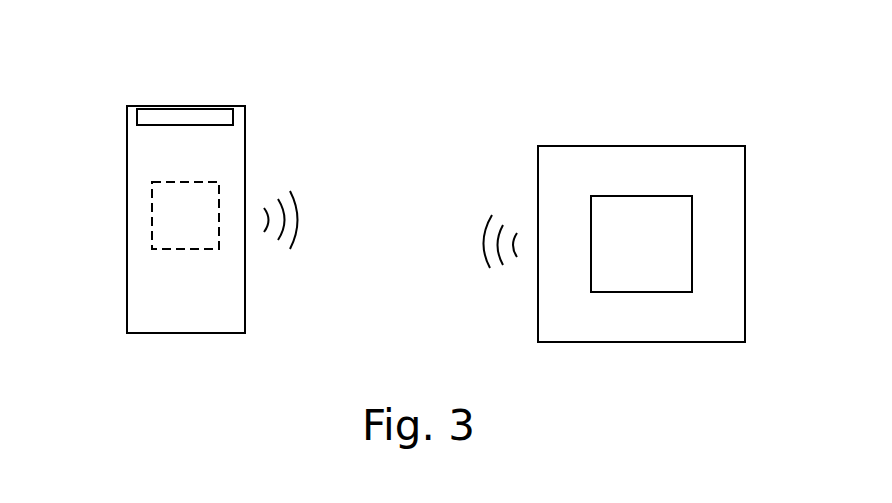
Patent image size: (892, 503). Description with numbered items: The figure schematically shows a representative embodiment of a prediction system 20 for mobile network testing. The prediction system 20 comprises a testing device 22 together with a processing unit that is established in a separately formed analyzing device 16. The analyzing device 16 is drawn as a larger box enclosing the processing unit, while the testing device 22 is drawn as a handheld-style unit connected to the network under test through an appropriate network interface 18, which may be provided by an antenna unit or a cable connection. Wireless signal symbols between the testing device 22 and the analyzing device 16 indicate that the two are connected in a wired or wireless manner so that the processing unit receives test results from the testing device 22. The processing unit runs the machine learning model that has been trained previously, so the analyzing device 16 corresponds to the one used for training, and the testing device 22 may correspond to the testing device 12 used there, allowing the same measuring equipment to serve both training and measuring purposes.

The testing device 12 is at (153, 305).
The analyzing device 16 is at (614, 318).
The network interface 18 is at (183, 117).
The prediction system 20 is at (93, 116).
The testing device 22 is at (192, 319).